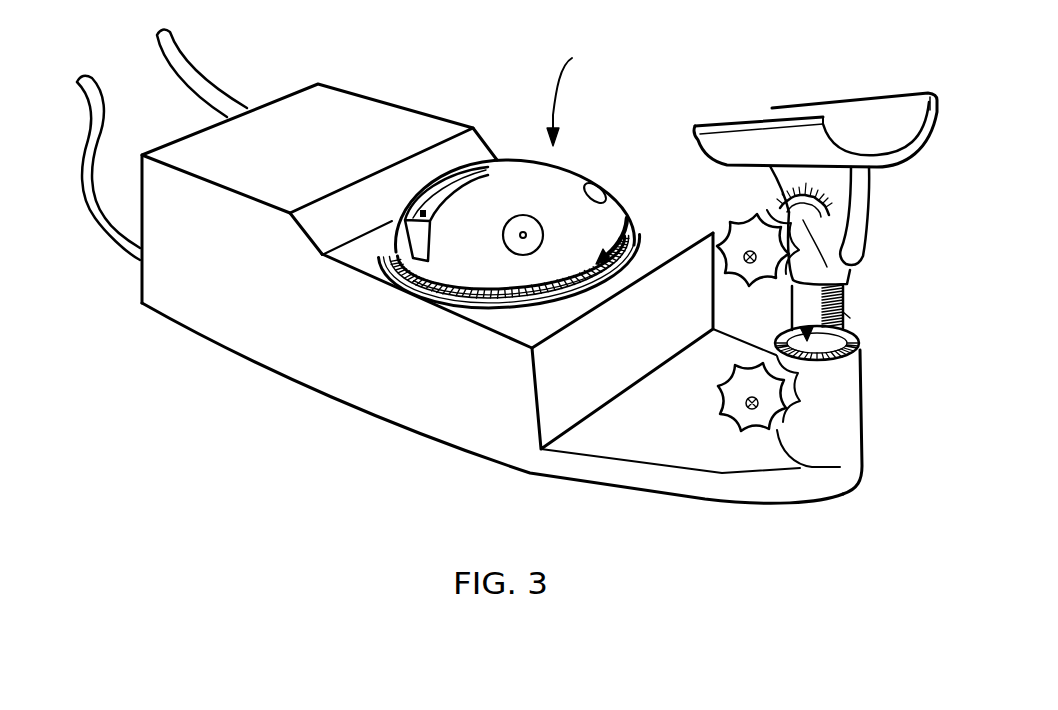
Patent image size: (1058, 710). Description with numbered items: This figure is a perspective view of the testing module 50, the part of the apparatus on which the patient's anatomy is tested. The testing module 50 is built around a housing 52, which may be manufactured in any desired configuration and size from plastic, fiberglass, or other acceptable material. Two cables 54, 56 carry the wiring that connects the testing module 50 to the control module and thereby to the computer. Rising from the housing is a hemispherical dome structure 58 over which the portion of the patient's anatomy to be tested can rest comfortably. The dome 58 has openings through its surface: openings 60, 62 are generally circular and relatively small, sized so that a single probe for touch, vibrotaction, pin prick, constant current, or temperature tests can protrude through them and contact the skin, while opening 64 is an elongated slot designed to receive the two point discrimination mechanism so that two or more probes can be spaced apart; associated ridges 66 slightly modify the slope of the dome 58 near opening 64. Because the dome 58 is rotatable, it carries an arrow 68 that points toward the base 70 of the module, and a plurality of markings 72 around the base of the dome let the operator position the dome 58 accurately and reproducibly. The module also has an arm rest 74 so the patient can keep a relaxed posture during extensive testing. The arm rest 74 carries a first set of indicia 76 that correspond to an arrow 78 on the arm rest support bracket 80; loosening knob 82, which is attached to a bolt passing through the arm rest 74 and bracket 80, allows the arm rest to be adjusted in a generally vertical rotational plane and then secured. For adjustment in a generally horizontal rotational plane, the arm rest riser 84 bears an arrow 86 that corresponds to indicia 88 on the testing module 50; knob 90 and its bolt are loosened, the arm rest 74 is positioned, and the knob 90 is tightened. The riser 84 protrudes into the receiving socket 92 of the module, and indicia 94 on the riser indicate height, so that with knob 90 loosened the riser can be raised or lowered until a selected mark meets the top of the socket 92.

The testing module 50 is at (572, 97).
The housing 52 is at (353, 360).
The cable 54 is at (187, 85).
The cable 56 is at (95, 127).
The hemispherical dome structure 58 is at (456, 264).
The opening 60 is at (582, 192).
The opening 62 is at (537, 250).
The opening 64 is at (443, 206).
The ridges 66 is at (437, 230).
The arrow 68 is at (627, 218).
The base 70 is at (533, 325).
The markings 72 is at (507, 298).
The arm rest 74 is at (863, 184).
The first set of indicia 76 is at (847, 203).
The arrow 78 is at (830, 227).
The arm rest support bracket 80 is at (853, 270).
The knob 82 is at (732, 228).
The arm rest riser 84 is at (847, 293).
The arrow 86 is at (792, 324).
The indicia 88 is at (857, 342).
The knob 90 is at (727, 392).
The receiving socket 92 is at (837, 430).
The indicia 94 is at (850, 318).